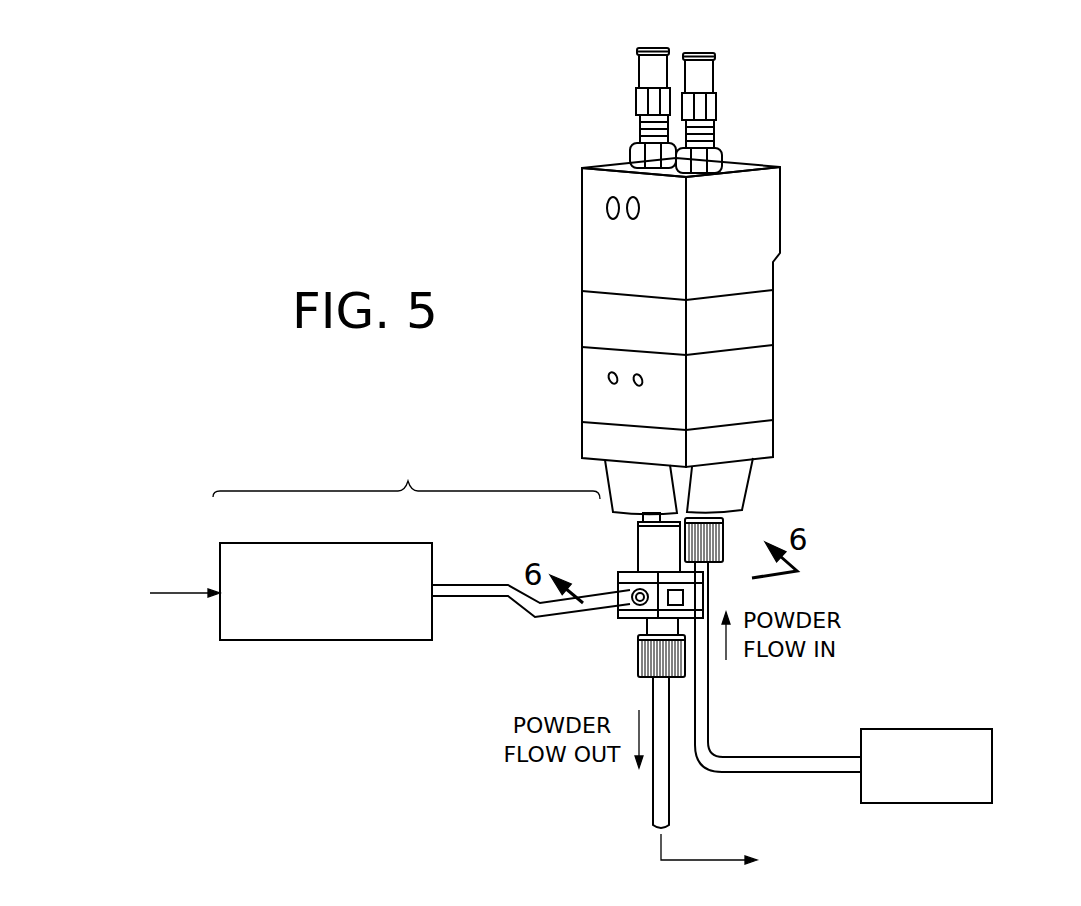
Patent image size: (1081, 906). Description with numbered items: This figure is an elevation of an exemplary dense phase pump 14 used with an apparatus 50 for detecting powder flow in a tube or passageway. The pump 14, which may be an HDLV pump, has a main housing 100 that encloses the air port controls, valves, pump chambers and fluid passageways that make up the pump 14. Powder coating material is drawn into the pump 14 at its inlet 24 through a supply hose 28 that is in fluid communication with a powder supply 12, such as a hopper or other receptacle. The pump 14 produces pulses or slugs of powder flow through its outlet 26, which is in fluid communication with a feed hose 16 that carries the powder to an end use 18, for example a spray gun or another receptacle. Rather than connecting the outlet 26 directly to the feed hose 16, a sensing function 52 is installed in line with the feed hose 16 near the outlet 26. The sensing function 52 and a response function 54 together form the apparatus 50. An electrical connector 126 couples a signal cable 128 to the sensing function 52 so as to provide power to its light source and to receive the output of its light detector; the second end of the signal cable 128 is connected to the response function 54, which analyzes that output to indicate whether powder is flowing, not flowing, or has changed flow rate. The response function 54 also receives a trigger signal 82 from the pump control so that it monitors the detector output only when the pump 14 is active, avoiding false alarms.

The powder supply 12 is at (923, 727).
The pump 14 is at (838, 217).
The feed hose 16 is at (650, 808).
The end use 18 is at (796, 854).
The inlet 24 is at (733, 535).
The outlet 26 is at (648, 510).
The supply hose 28 is at (712, 718).
The apparatus for detecting flow of powder 50 is at (406, 477).
The sensing function 52 is at (625, 567).
The response function 54 is at (282, 645).
The trigger signal 82 is at (138, 594).
The main housing 100 is at (778, 328).
The electrical connector 126 is at (632, 618).
The signal cable 128 is at (445, 598).